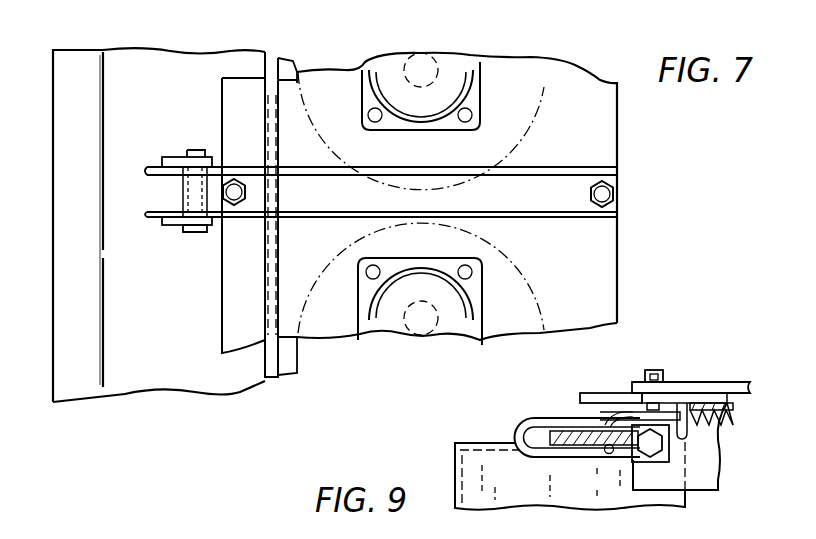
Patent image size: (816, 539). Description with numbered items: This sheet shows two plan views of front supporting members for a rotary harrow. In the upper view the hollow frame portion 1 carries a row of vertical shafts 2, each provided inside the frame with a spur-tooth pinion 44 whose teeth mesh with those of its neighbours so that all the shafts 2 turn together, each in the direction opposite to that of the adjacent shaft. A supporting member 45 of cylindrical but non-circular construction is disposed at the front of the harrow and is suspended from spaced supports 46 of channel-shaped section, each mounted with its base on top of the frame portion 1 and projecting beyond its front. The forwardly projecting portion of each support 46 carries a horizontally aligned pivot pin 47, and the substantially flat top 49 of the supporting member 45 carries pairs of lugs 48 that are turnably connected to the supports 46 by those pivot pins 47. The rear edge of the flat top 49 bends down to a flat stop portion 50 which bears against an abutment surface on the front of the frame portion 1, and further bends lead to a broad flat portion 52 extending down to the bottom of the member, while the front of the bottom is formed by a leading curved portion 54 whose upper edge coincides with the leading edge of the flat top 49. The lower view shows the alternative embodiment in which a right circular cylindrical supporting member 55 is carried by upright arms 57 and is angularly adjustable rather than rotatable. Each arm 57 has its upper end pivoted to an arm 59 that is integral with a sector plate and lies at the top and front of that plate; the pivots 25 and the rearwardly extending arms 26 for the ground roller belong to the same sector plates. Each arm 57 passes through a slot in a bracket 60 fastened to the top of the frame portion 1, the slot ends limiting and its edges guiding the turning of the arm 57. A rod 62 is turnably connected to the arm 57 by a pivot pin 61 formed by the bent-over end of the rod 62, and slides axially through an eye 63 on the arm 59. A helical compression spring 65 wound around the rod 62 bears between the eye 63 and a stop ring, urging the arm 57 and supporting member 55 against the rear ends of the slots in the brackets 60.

In FIG. 7, the hollow frame portion 1 is at (616, 256).
In FIG. 9, the hollow frame portion 1 is at (712, 486).
In FIG. 7, the shaft 2 is at (436, 62).
In FIG. 9, the pivot 25 is at (658, 370).
In FIG. 9, the arm 26 is at (740, 382).
In FIG. 7, the spur-tooth pinion 44 is at (533, 120).
In FIG. 7, the supporting member 45 is at (176, 43).
In FIG. 7, the support 46 is at (146, 213).
In FIG. 7, the pivot pin 47 is at (188, 233).
In FIG. 7, the lug 48 is at (173, 155).
In FIG. 7, the flat top 49 is at (200, 58).
In FIG. 7, the flat stop portion 50 is at (270, 60).
In FIG. 7, the broad flat portion 52 is at (300, 67).
In FIG. 7, the leading curved portion 54 is at (90, 58).
In FIG. 9, the supporting member 55 is at (454, 467).
In FIG. 9, the arm 57 is at (568, 431).
In FIG. 9, the arm 59 is at (588, 393).
In FIG. 9, the bracket 60 is at (522, 423).
In FIG. 9, the pivot pin 61 is at (607, 457).
In FIG. 9, the rod 62 is at (730, 416).
In FIG. 9, the eye 63 is at (694, 446).
In FIG. 9, the helical compression spring 65 is at (730, 426).